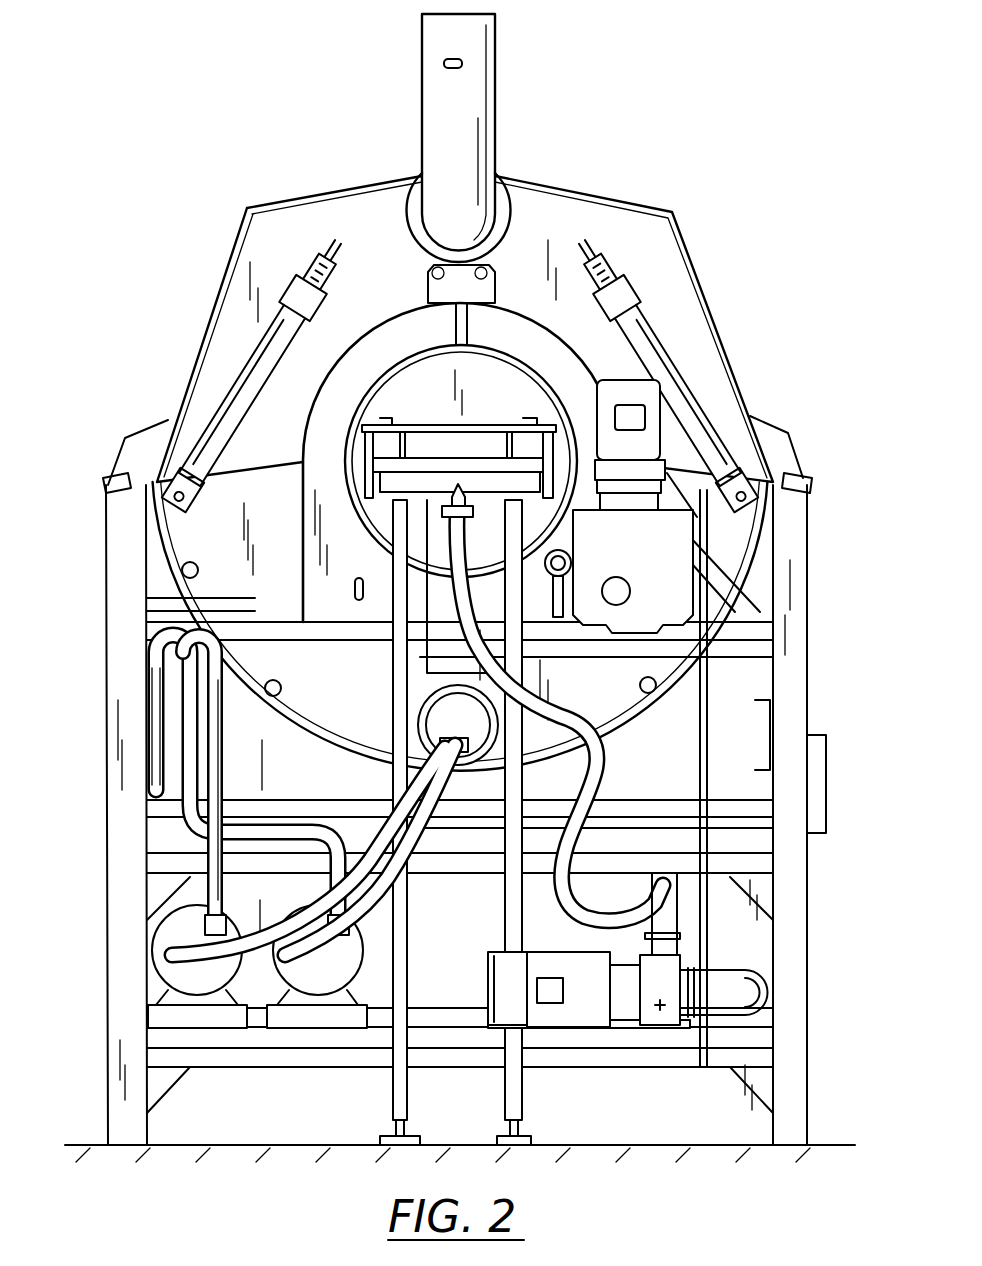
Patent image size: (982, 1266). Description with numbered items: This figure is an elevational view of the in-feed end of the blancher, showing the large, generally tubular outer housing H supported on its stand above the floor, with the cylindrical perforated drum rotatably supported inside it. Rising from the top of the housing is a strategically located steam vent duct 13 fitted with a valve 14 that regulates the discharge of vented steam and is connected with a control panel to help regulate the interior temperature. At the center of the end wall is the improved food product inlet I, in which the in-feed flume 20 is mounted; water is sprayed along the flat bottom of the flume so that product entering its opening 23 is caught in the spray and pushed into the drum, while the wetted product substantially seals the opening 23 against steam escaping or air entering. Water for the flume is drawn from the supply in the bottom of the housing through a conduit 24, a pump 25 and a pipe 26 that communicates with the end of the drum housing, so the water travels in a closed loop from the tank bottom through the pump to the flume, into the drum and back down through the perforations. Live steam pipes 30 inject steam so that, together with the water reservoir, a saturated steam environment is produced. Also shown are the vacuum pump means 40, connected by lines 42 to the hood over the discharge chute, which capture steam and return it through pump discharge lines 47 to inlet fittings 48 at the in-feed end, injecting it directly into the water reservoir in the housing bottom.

The steam vent duct 13 is at (492, 105).
The valve 14 is at (462, 63).
The outer housing H is at (698, 265).
The food product inlet I is at (400, 411).
The in-feed flume 20 is at (492, 425).
The opening 23 is at (435, 455).
The conduit 24 is at (607, 774).
The pump 25 is at (660, 1005).
The pipe 26 is at (708, 982).
The live steam pipes 30 is at (272, 700).
The vacuum pump means 40 is at (320, 990).
The lines 42 is at (208, 718).
The pump discharge lines 47 is at (292, 912).
The inlet fittings 48 is at (430, 718).